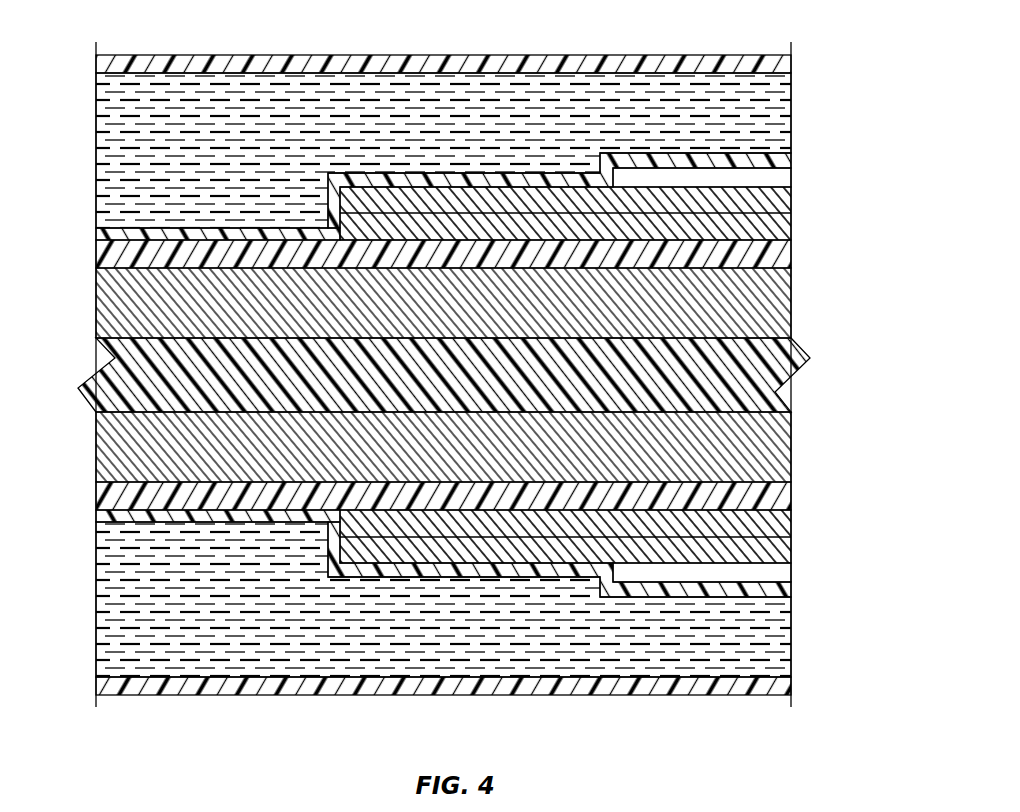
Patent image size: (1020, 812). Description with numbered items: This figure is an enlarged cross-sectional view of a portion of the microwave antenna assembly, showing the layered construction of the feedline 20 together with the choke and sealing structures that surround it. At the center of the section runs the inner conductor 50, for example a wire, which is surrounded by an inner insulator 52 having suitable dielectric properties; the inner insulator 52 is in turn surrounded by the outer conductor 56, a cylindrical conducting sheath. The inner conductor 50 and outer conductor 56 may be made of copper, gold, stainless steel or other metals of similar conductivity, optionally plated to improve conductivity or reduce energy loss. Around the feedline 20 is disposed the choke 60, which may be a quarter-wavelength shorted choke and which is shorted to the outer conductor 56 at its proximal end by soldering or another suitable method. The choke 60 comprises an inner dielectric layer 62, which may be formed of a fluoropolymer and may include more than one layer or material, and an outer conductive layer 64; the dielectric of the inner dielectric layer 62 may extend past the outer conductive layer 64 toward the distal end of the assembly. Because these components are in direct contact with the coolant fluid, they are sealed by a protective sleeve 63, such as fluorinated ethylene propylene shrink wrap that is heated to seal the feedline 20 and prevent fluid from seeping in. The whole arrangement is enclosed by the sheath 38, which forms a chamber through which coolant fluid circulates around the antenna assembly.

The feedline 20 is at (136, 209).
The sheath 38 is at (632, 56).
The inner conductor 50 is at (775, 364).
The inner insulator 52 is at (770, 307).
The outer conductor 56 is at (770, 258).
The choke 60 is at (791, 155).
The inner dielectric layer 62 is at (766, 207).
The protective sleeve 63 is at (99, 237).
The outer conductive layer 64 is at (766, 178).